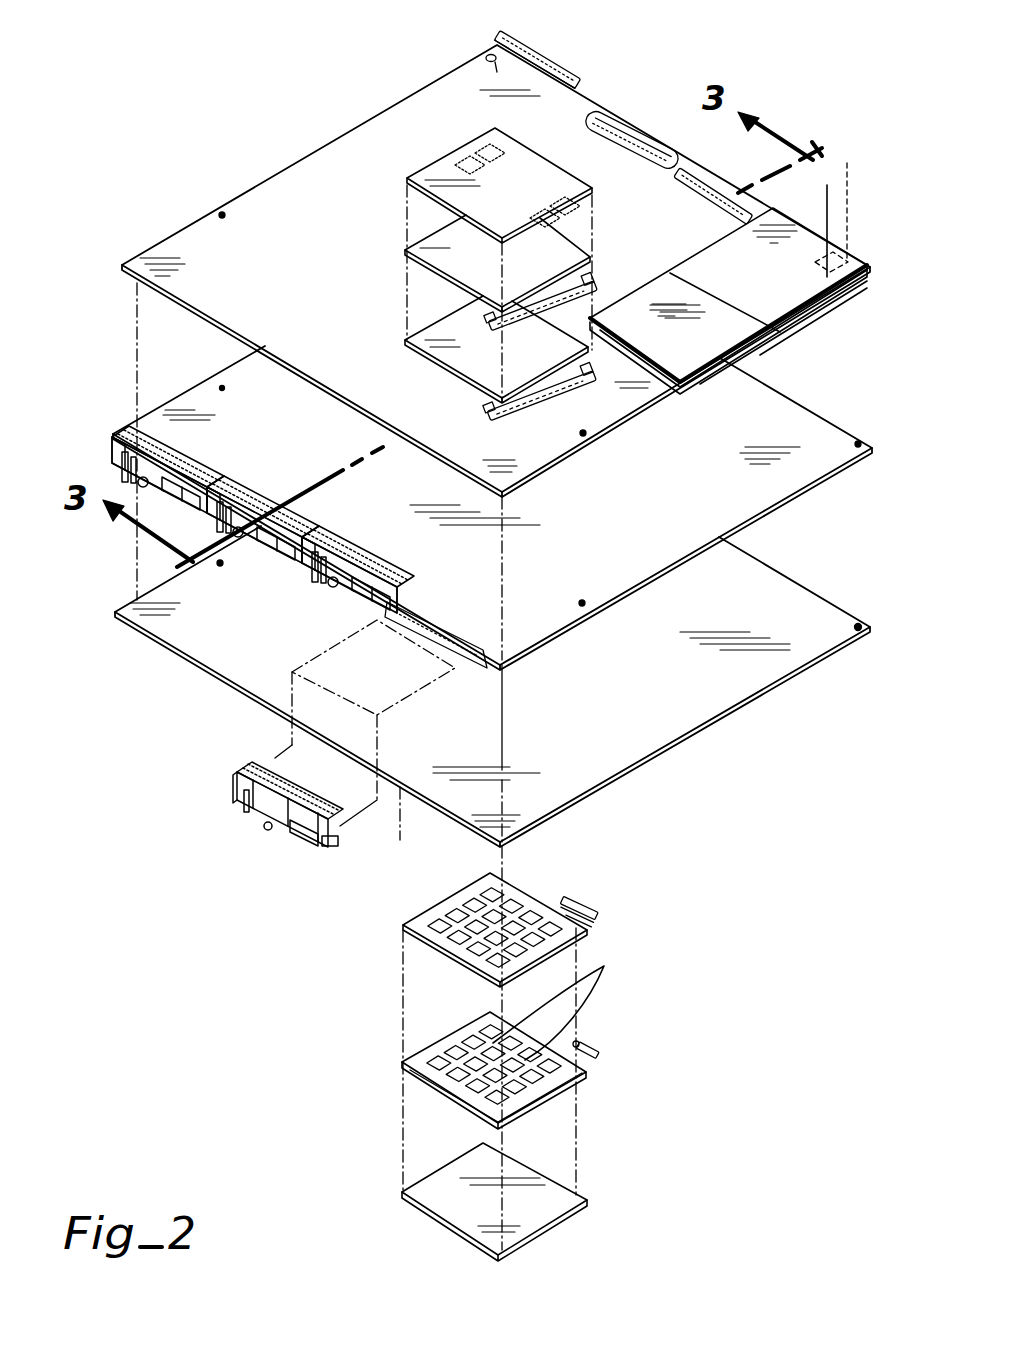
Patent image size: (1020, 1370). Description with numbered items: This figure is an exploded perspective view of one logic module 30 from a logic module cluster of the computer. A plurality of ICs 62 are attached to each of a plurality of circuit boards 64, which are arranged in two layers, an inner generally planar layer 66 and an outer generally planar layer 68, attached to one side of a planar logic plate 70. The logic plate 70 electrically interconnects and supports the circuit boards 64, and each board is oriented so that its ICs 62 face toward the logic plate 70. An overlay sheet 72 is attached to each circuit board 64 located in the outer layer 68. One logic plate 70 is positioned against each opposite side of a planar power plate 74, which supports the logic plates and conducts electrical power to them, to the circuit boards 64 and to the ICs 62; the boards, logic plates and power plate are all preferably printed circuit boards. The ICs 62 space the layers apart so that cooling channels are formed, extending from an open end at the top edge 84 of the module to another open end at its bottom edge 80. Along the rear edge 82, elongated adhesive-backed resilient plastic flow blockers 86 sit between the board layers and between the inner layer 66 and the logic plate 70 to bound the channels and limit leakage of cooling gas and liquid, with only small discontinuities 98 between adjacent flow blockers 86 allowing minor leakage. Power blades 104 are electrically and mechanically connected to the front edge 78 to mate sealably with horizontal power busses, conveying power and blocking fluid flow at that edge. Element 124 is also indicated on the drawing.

The logic module 30 is at (868, 128).
The ICs 62 is at (569, 1010).
The circuit boards 64 is at (575, 1083).
The inner generally planar layer 66 is at (616, 904).
The outer generally planar layer 68 is at (613, 1071).
The logic plate 70 is at (262, 181).
The overlay sheet 72 is at (580, 1201).
The power plate 74 is at (862, 444).
The front edge 78 is at (52, 717).
The bottom edge 80 is at (782, 740).
The rear edge 82 is at (745, 177).
The top edge 84 is at (178, 173).
The flow blockers 86 is at (557, 63).
The small discontinuities 98 is at (588, 118).
The power blades 104 is at (318, 846).
The connector bar 124 is at (290, 548).